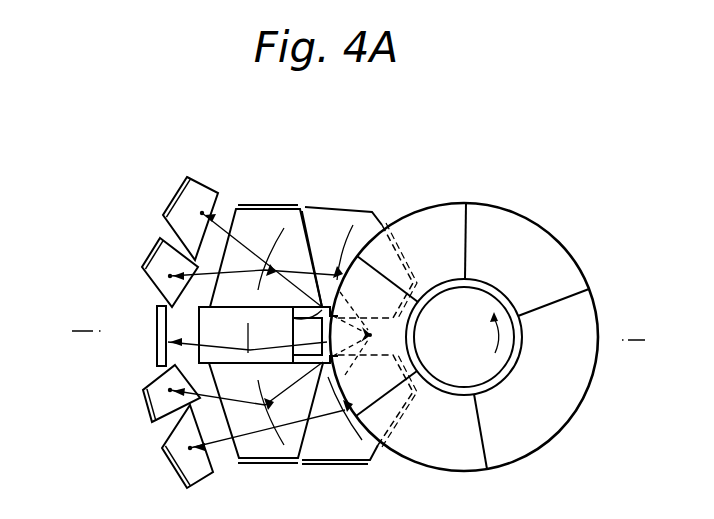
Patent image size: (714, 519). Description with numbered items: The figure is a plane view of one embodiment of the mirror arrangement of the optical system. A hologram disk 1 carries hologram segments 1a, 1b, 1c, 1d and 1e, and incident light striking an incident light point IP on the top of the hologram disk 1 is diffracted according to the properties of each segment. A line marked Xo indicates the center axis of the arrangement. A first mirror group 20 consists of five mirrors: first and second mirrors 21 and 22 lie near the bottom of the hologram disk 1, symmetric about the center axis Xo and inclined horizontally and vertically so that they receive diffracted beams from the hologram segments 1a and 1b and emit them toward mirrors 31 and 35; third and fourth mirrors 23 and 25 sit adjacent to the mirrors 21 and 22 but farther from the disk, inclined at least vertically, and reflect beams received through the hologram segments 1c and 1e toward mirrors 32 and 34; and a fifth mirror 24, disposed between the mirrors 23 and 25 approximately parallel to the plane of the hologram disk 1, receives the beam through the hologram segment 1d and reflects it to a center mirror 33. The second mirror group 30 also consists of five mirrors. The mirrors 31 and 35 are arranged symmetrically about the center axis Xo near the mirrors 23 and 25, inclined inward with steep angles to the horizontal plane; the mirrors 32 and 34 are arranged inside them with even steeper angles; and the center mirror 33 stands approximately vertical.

The hologram disk 1 is at (597, 301).
The hologram segment 1a is at (462, 473).
The hologram segment 1b is at (406, 344).
The hologram segment 1c is at (437, 211).
The hologram segment 1d is at (551, 239).
The hologram segment 1e is at (570, 414).
The first mirror group 20 is at (329, 163).
The first mirror 21 is at (353, 466).
The second mirror 22 is at (363, 208).
The third mirror 23 is at (280, 466).
The fifth mirror 24 is at (343, 296).
The fourth mirror 25 is at (277, 205).
The second mirror group 30 is at (196, 157).
The mirror 31 is at (177, 485).
The mirror 32 is at (150, 422).
The center mirror 33 is at (156, 353).
The mirror 34 is at (140, 268).
The mirror 35 is at (165, 210).
The incident light point IP is at (382, 331).
The center axis Xo is at (355, 337).